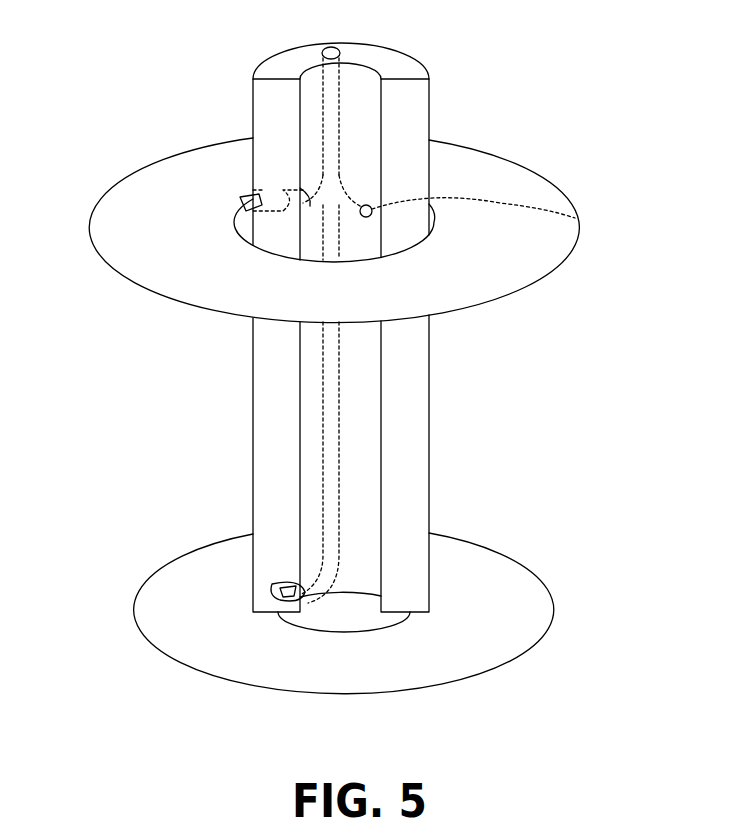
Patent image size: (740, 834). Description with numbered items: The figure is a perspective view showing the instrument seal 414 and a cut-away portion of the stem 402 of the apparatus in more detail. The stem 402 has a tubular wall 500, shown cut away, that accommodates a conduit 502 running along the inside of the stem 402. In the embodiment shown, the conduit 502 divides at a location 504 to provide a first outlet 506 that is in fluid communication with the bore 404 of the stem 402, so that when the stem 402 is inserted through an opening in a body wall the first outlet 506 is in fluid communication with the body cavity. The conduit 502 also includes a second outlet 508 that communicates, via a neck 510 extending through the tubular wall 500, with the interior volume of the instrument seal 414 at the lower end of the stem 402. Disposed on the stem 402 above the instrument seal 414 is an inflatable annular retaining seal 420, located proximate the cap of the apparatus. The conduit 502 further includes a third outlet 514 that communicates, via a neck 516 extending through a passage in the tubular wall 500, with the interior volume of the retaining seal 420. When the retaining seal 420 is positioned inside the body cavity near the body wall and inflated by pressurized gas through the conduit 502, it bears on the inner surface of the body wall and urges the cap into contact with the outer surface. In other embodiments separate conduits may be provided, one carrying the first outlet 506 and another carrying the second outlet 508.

The stem 402 is at (431, 111).
The bore 404 is at (357, 386).
The instrument seal 414 is at (185, 637).
The inflatable annular retaining seal 420 is at (135, 242).
The tubular wall 500 is at (282, 70).
The conduit 502 is at (340, 84).
The location 504 is at (351, 171).
The first outlet 506 is at (575, 218).
The second outlet 508 is at (303, 583).
The neck 510 is at (290, 578).
The third outlet 514 is at (300, 188).
The neck 516 is at (248, 196).